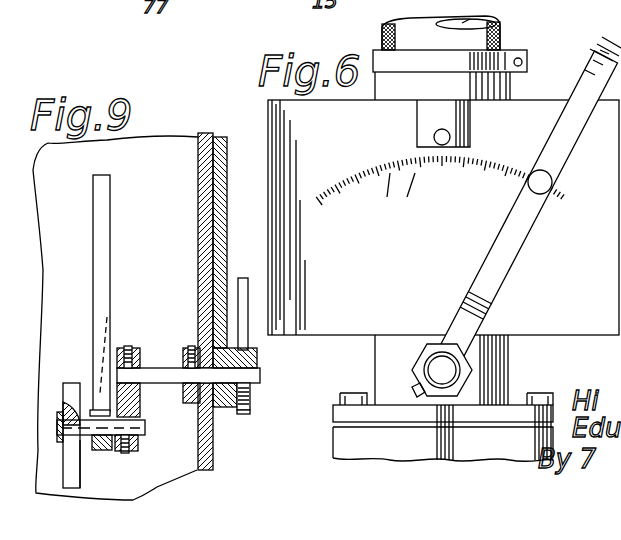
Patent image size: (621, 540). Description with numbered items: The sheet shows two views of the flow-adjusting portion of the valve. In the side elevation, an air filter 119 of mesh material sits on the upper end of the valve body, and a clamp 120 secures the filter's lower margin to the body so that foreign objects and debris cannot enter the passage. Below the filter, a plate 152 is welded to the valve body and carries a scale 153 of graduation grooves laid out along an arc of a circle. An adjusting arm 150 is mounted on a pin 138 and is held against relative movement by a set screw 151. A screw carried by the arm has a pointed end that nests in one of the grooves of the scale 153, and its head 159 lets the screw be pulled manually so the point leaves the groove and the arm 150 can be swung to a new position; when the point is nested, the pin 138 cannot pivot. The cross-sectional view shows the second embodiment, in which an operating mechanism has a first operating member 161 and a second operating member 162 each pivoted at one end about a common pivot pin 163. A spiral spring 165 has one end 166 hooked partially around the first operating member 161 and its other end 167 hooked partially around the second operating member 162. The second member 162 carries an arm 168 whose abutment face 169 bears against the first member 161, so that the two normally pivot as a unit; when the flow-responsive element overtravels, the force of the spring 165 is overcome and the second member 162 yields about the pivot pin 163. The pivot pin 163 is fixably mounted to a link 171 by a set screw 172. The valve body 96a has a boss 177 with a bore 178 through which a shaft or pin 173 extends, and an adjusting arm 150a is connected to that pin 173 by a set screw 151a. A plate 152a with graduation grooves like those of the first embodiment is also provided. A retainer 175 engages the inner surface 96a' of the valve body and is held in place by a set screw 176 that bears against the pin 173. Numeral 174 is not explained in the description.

In FIG. 9, the valve body 96a is at (219, 225).
In FIG. 9, the inner surface of the valve body 96a' is at (188, 227).
In FIG. 9, the plate 152a is at (227, 148).
In FIG. 9, the first operating member 161 is at (110, 214).
In FIG. 9, the bore 178 is at (240, 315).
In FIG. 9, the shaft or pin 173 is at (145, 368).
In FIG. 9, the set screw 176 is at (190, 348).
In FIG. 9, the bolt 174 is at (121, 352).
In FIG. 9, the adjusting arm 150a is at (240, 343).
In FIG. 9, the link 171 is at (141, 406).
In FIG. 9, the set screw 172 is at (206, 442).
In FIG. 9, the boss 177 is at (248, 398).
In FIG. 9, the set screw 151a is at (250, 394).
In FIG. 6, the set screw 151a is at (443, 427).
In FIG. 9, the retainer 175 is at (148, 428).
In FIG. 9, the pivot pin 163 is at (140, 431).
In FIG. 9, the abutment face 169 is at (100, 385).
In FIG. 9, the end of spiral spring 166 is at (118, 325).
In FIG. 9, the spiral spring 165 is at (76, 410).
In FIG. 9, the arm 168 is at (80, 385).
In FIG. 9, the other end of spiral spring 167 is at (85, 478).
In FIG. 9, the second operating member 162 is at (80, 468).
In FIG. 6, the plate 152 is at (582, 326).
In FIG. 6, the scale 153 is at (343, 187).
In FIG. 6, the clamp 120 is at (372, 50).
In FIG. 6, the air filter 119 is at (495, 32).
In FIG. 6, the adjusting arm 150 is at (503, 297).
In FIG. 6, the head 159 is at (552, 182).
In FIG. 6, the set screw 151 is at (413, 385).
In FIG. 6, the pin 138 is at (424, 363).